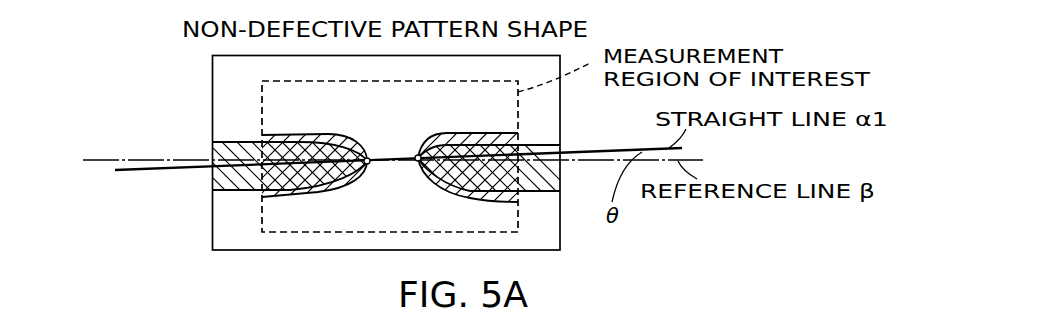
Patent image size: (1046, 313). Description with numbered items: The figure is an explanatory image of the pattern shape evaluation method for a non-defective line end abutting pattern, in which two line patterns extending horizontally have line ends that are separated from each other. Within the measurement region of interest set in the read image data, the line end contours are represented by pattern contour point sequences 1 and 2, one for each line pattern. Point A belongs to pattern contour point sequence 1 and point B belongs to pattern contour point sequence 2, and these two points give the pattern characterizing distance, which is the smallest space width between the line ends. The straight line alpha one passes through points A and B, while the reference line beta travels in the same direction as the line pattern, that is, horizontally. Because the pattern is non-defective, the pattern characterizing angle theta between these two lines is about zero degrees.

The pattern contour point sequence 1 is at (303, 131).
The pattern contour point sequence 2 is at (468, 133).
The point A is at (371, 165).
The point B is at (415, 164).